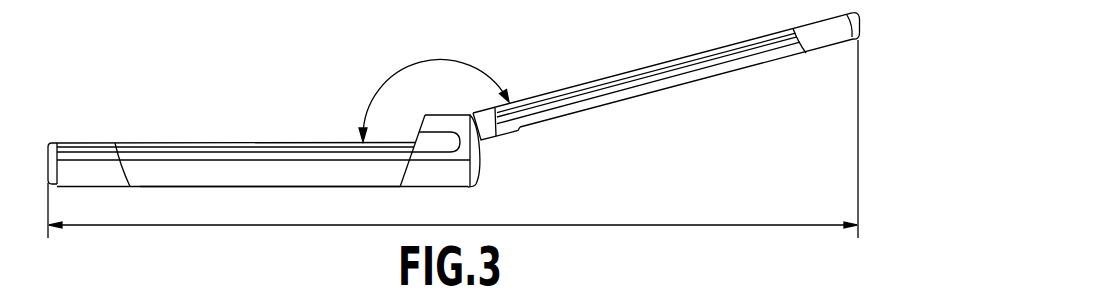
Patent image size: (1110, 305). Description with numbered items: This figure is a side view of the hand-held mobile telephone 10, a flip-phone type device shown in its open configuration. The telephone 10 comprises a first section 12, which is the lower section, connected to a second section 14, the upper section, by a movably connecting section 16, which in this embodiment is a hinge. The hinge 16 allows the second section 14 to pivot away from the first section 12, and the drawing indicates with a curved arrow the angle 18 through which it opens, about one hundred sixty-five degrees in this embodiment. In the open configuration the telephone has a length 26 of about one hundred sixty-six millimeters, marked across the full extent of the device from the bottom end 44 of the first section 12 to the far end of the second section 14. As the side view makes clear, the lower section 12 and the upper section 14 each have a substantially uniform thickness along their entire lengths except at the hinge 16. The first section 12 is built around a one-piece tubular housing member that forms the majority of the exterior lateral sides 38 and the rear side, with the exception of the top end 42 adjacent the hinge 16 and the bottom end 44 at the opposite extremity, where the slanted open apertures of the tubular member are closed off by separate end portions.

The telephone 10 is at (53, 145).
The first section 12 is at (147, 143).
The second section 14 is at (692, 83).
The connecting section 16 is at (481, 142).
The angle 18 is at (407, 66).
The length 26 is at (580, 225).
The lateral sides 38 is at (247, 168).
The top end 42 is at (433, 177).
The bottom end 44 is at (118, 174).